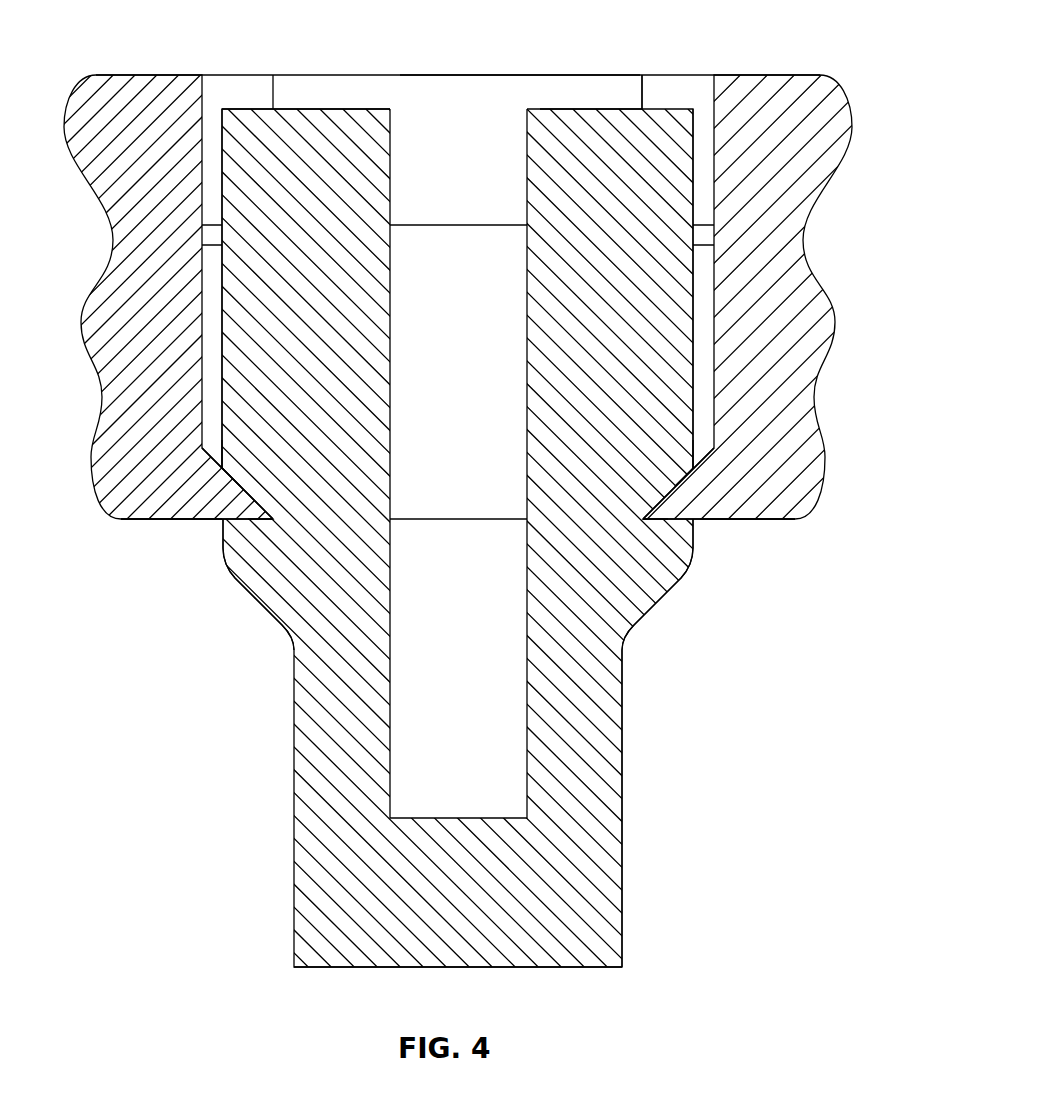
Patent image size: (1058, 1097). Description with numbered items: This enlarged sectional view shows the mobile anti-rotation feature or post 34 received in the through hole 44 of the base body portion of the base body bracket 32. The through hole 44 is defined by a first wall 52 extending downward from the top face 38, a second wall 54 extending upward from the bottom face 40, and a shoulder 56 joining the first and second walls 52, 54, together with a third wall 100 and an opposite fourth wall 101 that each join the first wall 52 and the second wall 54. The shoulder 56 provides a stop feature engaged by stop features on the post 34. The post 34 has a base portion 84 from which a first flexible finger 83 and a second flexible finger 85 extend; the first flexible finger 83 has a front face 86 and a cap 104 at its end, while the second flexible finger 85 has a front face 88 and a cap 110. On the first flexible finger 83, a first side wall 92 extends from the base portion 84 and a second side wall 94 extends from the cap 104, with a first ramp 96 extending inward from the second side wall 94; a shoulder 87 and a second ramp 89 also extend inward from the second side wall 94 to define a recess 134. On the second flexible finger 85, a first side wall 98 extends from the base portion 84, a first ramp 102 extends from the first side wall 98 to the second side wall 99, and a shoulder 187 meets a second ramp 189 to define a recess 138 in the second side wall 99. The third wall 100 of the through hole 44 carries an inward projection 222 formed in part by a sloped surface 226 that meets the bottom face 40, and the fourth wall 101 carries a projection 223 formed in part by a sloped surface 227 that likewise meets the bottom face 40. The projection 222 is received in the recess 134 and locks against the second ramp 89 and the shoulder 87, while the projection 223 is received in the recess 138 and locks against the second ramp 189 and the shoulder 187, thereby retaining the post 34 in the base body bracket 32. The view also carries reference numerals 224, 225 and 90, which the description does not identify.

The base body bracket 32 is at (848, 88).
The top face 38 is at (150, 74).
The through hole 44 is at (515, 68).
The first flexible finger 83 is at (250, 98).
The cap 104 is at (297, 109).
The mobile anti-rotation feature or post 34 is at (571, 104).
The cap 110 is at (612, 109).
The second flexible finger 85 is at (681, 104).
The first wall 52 is at (455, 160).
The shoulder 56 is at (435, 225).
The second wall 54 is at (455, 365).
The second side wall 94 is at (218, 300).
The second side wall 99 is at (714, 232).
The first or front face 88 is at (708, 292).
The first or front face 86 is at (240, 385).
The third wall 100 is at (222, 246).
The fourth wall 101 is at (693, 296).
The second ramp 89 is at (222, 466).
The second ramp 189 is at (700, 462).
The projection 222 is at (218, 480).
The sloped surface 226 is at (238, 492).
The projection 223 is at (703, 473).
The sloped surface 227 is at (680, 487).
The left seal 224 is at (262, 523).
The right seal 225 is at (650, 523).
The shoulder 87 is at (232, 523).
The shoulder 187 is at (689, 519).
The recess 134 is at (222, 521).
The recess 138 is at (773, 519).
The bottom face 40 is at (166, 520).
The first ramp 96 is at (270, 622).
The first ramp 102 is at (657, 613).
The first side wall 98 is at (622, 738).
The first side wall 92 is at (294, 800).
The lower passage 90 is at (497, 742).
The base portion 84 is at (435, 918).